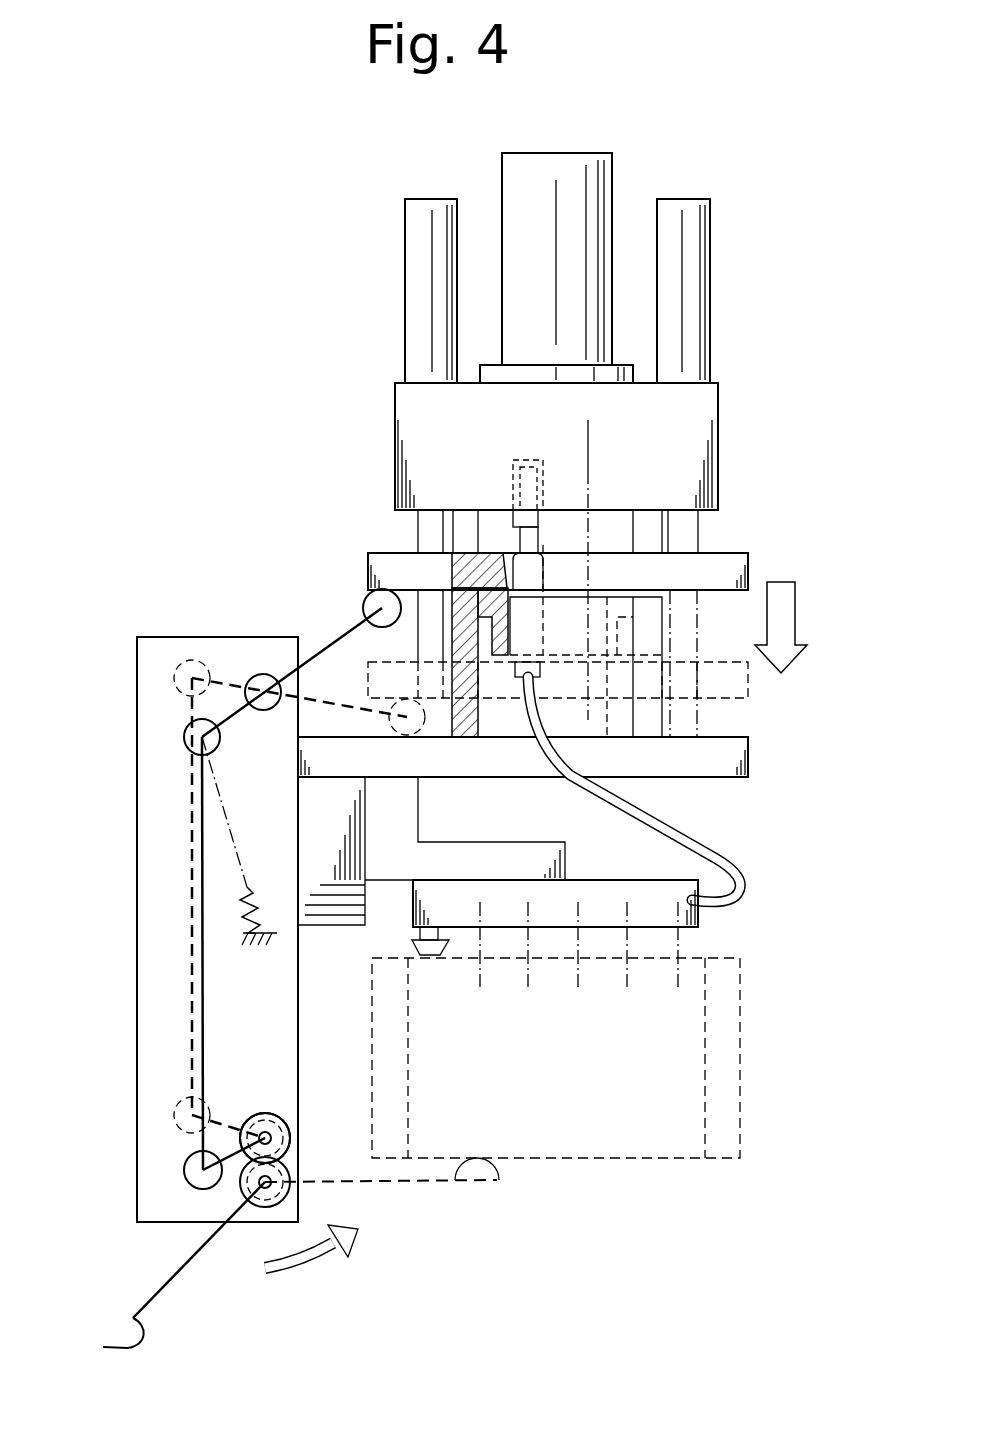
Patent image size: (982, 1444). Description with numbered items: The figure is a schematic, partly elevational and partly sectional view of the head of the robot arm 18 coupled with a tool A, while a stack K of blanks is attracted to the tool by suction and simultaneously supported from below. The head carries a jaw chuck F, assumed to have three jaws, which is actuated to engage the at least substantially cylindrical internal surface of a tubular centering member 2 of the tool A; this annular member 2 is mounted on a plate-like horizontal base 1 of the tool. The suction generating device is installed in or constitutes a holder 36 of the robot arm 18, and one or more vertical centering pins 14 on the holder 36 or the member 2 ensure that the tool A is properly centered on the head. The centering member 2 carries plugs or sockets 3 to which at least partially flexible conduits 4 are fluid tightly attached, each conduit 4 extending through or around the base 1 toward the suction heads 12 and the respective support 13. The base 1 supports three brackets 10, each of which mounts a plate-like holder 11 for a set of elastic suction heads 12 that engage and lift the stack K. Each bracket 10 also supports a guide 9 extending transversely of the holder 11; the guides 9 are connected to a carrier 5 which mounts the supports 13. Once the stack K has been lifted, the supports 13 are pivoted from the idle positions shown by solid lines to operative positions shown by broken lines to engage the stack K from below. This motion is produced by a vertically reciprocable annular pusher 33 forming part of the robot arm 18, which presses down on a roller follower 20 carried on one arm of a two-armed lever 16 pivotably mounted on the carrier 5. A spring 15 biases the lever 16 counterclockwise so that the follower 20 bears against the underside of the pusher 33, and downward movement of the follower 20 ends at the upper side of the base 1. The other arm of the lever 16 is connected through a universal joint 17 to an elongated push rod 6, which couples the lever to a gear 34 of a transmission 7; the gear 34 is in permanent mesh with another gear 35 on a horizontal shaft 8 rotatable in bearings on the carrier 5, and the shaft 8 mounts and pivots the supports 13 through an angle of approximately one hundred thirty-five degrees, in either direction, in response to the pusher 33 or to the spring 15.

The base 1 is at (720, 755).
The centering member 2 is at (617, 532).
The plugs or sockets 3 is at (537, 615).
The conduit 4 is at (723, 847).
The carrier 5 is at (157, 1127).
The connecting member 6 is at (200, 990).
The transmission 7 is at (252, 1095).
The horizontal shaft 8 is at (262, 1190).
The guide 9 is at (327, 890).
The bracket 10 is at (517, 860).
The plate-like holder 11 is at (698, 905).
The suction heads 12 is at (432, 958).
The supports 13 is at (425, 1182).
The centering pins 14 is at (588, 455).
The spring 15 is at (240, 902).
The two-armed lever 16 is at (232, 717).
The universal joint 17 is at (175, 678).
The robot arm 18 is at (597, 175).
The roller follower 20 is at (377, 605).
The annular pusher 33 is at (740, 573).
The gear 34 is at (280, 1127).
The gear 35 is at (293, 1200).
The holder 36 is at (703, 415).
The tool A is at (258, 590).
The jaw chuck F is at (450, 590).
The stack K is at (622, 1133).